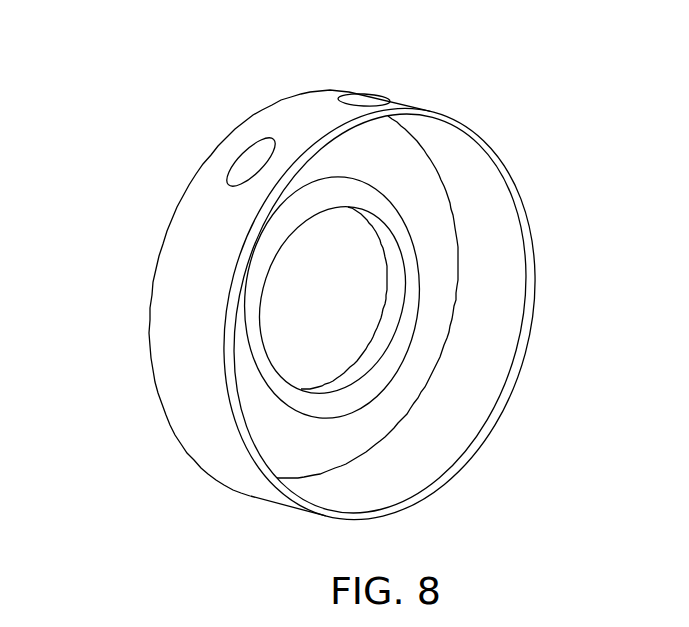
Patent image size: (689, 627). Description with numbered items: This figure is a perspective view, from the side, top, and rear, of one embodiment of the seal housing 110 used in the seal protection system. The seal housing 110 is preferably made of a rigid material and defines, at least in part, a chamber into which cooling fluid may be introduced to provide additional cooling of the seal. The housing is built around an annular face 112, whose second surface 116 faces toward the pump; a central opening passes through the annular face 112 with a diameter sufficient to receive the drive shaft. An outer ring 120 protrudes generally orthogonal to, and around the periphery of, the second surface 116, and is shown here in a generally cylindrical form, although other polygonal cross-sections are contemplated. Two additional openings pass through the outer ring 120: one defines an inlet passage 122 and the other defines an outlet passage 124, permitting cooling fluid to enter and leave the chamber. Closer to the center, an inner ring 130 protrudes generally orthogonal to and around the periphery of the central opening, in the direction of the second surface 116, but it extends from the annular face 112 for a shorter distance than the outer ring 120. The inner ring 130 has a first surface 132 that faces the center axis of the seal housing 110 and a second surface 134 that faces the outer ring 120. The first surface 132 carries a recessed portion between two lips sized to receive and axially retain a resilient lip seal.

The seal housing 110 is at (143, 234).
The annular face 112 is at (380, 408).
The second surface 116 is at (413, 335).
The outer ring 120 is at (182, 301).
The inlet passage 122 is at (372, 100).
The outlet passage 124 is at (250, 160).
The inner ring 130 is at (262, 365).
The first surface 132 is at (344, 298).
The second surface 134 is at (261, 400).